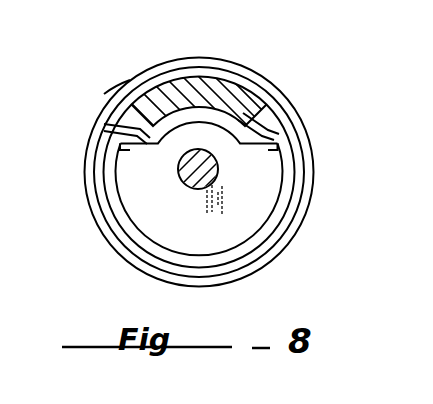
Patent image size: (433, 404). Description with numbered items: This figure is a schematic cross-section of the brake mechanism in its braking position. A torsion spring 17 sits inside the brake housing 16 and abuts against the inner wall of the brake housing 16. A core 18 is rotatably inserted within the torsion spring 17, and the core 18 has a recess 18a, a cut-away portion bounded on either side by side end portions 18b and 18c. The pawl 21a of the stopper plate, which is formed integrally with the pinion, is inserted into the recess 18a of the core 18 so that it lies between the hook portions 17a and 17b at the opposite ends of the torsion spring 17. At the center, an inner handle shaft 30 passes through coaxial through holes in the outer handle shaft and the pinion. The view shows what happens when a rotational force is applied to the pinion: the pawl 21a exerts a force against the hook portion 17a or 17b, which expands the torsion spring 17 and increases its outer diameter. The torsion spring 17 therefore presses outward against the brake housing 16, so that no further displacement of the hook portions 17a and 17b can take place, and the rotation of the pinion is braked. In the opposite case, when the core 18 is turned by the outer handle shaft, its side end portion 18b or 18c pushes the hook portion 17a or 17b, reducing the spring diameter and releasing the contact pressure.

The brake housing 16 is at (270, 86).
The torsion spring 17 is at (300, 168).
The hook portion 17a is at (130, 122).
The hook portion 17b is at (258, 120).
The core 18 is at (128, 198).
The recess 18a is at (193, 112).
The side end portion 18b is at (120, 147).
The side end portion 18c is at (266, 128).
The pawl 21a is at (150, 88).
The inner handle shaft 30 is at (217, 171).